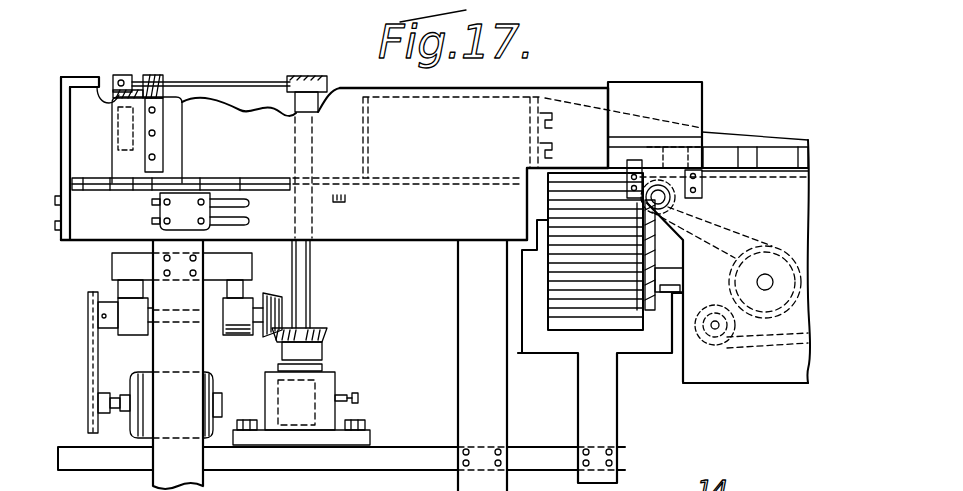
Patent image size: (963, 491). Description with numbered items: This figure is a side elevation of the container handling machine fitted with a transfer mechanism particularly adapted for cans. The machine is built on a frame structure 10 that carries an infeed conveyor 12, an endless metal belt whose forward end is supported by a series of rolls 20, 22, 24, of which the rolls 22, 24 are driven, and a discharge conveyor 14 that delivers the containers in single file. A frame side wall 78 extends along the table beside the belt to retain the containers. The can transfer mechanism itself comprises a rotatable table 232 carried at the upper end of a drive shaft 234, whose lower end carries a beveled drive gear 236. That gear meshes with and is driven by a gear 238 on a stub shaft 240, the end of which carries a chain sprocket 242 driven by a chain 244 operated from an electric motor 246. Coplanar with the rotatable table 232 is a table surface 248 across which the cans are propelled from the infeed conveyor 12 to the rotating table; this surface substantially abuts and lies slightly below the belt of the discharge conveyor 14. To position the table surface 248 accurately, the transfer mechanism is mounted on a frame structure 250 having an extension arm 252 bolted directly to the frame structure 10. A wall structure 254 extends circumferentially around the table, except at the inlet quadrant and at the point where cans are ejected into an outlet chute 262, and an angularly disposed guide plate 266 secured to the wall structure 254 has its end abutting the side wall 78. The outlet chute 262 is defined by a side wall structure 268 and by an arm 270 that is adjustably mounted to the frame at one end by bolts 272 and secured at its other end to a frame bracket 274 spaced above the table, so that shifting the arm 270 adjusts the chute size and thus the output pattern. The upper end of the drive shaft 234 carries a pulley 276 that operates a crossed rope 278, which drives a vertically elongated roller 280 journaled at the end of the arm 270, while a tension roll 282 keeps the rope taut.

The frame structure 10 is at (618, 405).
The infeed conveyor 12 is at (745, 232).
The discharge conveyor 14 is at (592, 308).
The roll 20 is at (700, 213).
The roll 22 is at (742, 270).
The roll 24 is at (715, 328).
The frame side wall 78 is at (717, 153).
The rotatable table 232 is at (228, 180).
The drive shaft 234 is at (312, 270).
The beveled drive gear 236 is at (327, 335).
The gear 238 is at (272, 332).
The stub shaft 240 is at (264, 296).
The chain sprocket 242 is at (90, 310).
The chain 244 is at (88, 365).
The electric motor 246 is at (88, 428).
The table surface 248 is at (535, 186).
The frame structure 250 is at (470, 377).
The extension arm 252 is at (542, 456).
The wall structure 254 is at (262, 100).
The outlet chute 262 is at (87, 100).
The guide plate 266 is at (733, 131).
The side wall structure 268 is at (66, 110).
The arm 270 is at (158, 132).
The bolts 272 is at (158, 221).
The frame bracket 274 is at (108, 87).
The pulley 276 is at (246, 62).
The crossed rope 278 is at (254, 106).
The roller 280 is at (123, 75).
The tension roll 282 is at (168, 78).